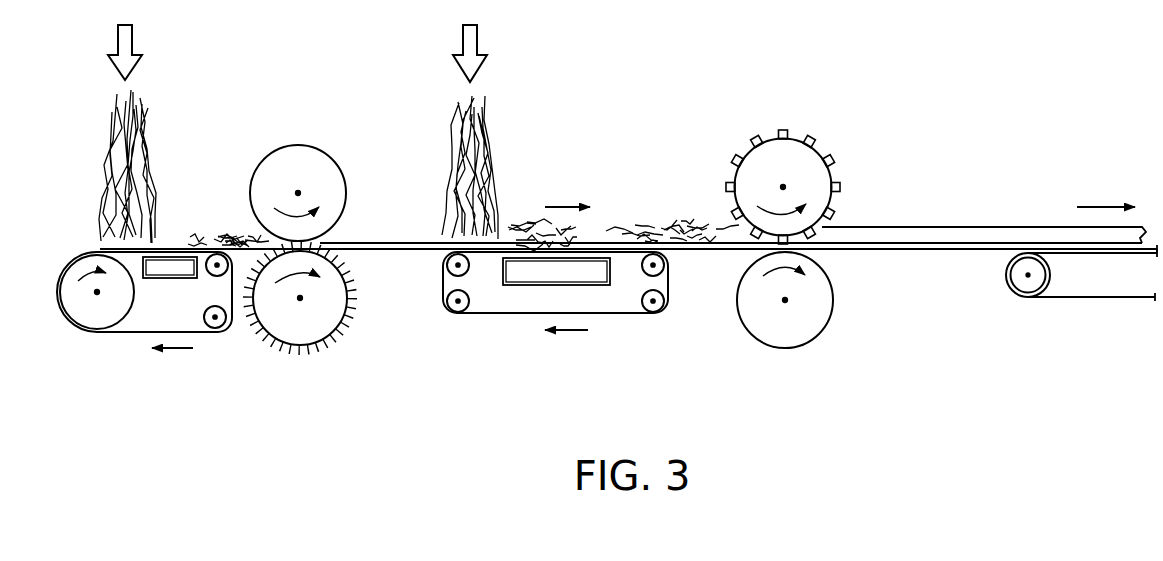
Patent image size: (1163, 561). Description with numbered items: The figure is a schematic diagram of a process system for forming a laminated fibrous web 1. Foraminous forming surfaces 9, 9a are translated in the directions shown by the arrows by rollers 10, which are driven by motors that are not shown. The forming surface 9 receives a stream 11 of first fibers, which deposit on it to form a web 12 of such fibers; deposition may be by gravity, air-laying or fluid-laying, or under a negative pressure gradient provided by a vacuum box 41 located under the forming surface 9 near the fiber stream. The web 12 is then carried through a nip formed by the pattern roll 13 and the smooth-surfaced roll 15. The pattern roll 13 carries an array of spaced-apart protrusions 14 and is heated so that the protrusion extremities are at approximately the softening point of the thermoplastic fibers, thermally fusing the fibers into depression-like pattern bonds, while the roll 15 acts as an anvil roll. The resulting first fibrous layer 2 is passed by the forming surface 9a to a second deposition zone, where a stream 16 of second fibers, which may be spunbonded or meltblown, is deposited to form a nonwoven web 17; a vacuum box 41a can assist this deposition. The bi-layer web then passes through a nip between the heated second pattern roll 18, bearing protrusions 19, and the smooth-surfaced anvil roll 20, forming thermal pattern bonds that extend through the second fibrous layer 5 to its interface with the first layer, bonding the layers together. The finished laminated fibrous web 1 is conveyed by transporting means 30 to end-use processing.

The laminated fibrous web 1 is at (934, 201).
The first fibrous layer 2 is at (382, 242).
The second fibrous layer 5 is at (1040, 230).
The foraminous forming surface 9 is at (67, 262).
The foraminous forming surface 9a is at (625, 313).
The rollers 10 is at (102, 315).
The stream of first fibers 11 is at (143, 182).
The web of first fibers 12 is at (203, 240).
The pattern roll 13 is at (330, 330).
The protrusions 14 is at (290, 348).
The smooth-surfaced roll 15 is at (312, 162).
The stream of second fibers 16 is at (493, 162).
The nonwoven web 17 is at (635, 225).
The second pattern roll 18 is at (793, 150).
The protrusions 19 is at (822, 143).
The smooth-surfaced roll 20 is at (800, 326).
The transporting means 30 is at (1098, 299).
The vacuum box 41 is at (151, 279).
The vacuum box 41a is at (522, 285).